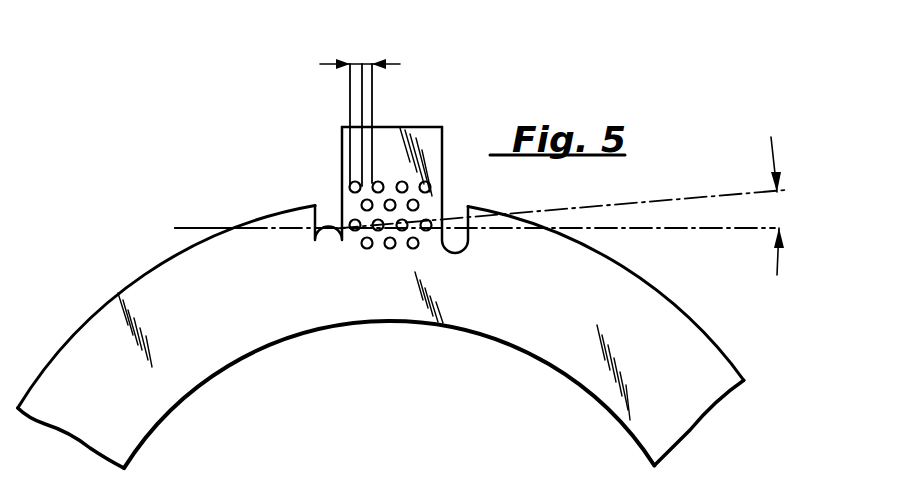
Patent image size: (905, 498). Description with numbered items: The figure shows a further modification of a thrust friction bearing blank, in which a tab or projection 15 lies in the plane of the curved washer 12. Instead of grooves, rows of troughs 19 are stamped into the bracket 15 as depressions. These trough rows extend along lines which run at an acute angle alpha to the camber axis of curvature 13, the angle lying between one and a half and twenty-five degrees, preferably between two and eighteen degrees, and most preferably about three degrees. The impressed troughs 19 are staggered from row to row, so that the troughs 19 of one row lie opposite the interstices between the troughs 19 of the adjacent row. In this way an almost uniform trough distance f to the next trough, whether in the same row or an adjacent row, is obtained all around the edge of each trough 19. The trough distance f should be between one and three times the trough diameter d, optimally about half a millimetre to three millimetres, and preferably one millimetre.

The washer 12 is at (68, 381).
The axis of curvature 13 is at (201, 227).
The tab or projection 15 is at (423, 125).
The troughs 19 is at (361, 205).
The trough diameter d is at (350, 61).
The trough distance f is at (372, 61).